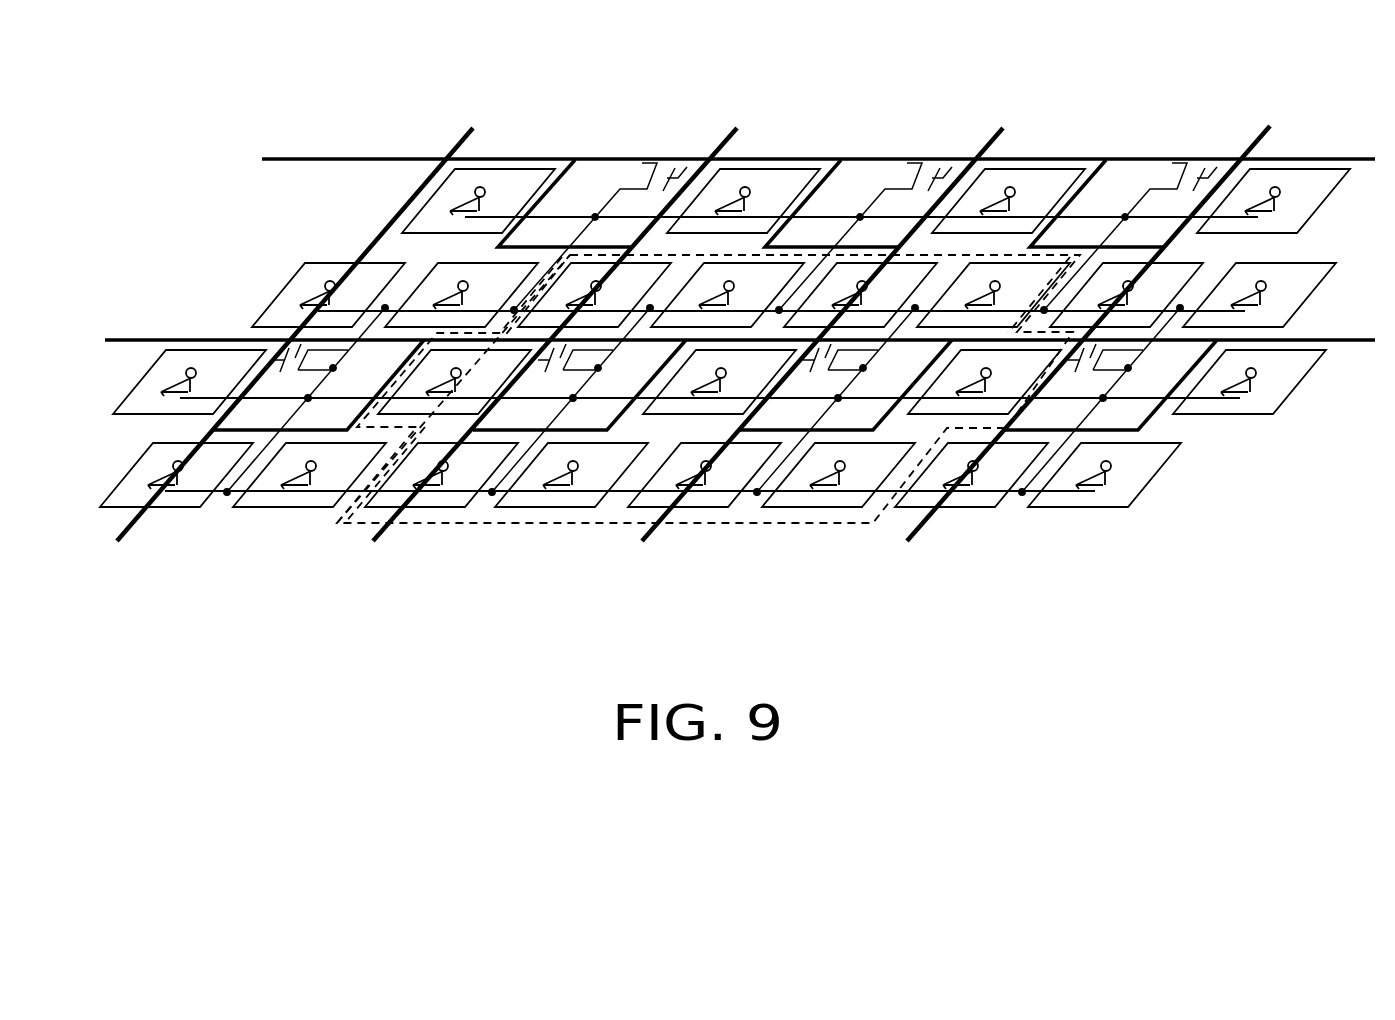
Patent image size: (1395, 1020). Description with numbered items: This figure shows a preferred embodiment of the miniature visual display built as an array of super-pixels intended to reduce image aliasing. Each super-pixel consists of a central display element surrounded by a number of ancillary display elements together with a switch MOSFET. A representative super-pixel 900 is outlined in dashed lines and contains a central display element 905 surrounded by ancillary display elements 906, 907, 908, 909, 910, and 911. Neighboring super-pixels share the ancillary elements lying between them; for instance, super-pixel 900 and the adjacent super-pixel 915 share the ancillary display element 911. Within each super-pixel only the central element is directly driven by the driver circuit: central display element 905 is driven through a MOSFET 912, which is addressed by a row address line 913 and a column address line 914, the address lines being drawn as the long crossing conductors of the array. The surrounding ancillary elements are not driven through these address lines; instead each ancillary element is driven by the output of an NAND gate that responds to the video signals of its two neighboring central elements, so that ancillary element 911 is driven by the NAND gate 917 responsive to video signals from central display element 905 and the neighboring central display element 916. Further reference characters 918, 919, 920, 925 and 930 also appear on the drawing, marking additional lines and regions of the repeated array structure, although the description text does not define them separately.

The super-pixel 900 is at (847, 527).
The central display element 905 is at (855, 468).
The ancillary display element 906 is at (722, 496).
The ancillary display element 907 is at (822, 490).
The ancillary display element 908 is at (932, 407).
The ancillary display element 909 is at (1020, 277).
The ancillary display element 910 is at (848, 280).
The ancillary display element 911 is at (620, 440).
The MOSFET 912 is at (865, 366).
The row address line 913 is at (1003, 128).
The column address line 914 is at (1303, 340).
The super-pixel 915 is at (1270, 128).
The central display element 916 is at (513, 413).
The NAND gate 917 is at (723, 386).
The bit line 918 is at (742, 159).
The memory cell element 919 is at (833, 303).
The word line 920 is at (1303, 159).
The access transistor region 925 is at (1147, 420).
The access transistor region 930 is at (1120, 187).